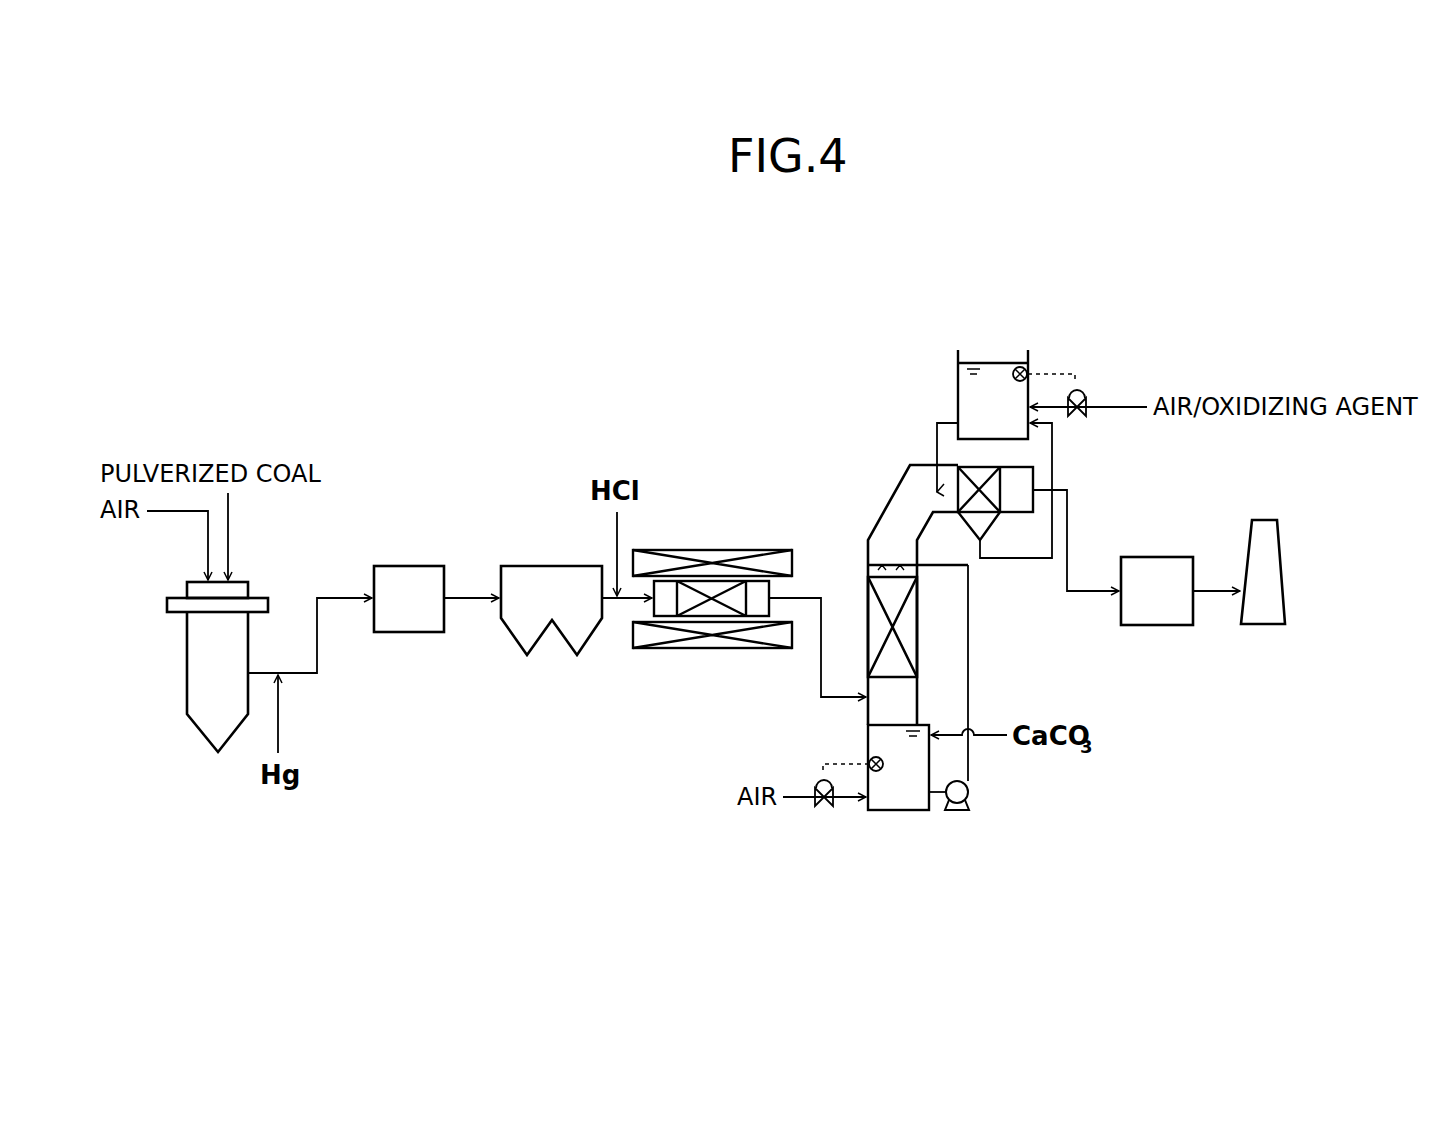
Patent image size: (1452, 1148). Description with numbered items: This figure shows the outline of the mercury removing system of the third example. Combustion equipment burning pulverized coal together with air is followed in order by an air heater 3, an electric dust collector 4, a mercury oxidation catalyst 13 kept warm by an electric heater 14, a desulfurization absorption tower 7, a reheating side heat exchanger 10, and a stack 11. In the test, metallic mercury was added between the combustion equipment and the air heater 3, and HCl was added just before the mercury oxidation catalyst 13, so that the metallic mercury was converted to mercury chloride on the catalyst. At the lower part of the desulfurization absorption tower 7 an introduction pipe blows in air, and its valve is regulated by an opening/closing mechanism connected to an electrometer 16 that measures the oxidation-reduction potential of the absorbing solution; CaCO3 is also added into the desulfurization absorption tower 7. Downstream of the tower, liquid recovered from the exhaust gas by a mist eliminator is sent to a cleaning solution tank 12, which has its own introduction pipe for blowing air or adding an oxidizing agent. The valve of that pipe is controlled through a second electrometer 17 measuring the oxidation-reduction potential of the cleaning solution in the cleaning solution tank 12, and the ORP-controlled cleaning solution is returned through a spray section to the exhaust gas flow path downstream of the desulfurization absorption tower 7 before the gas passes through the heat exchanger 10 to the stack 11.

The air heater 3 is at (399, 566).
The dust collector 4 is at (525, 566).
The desulfurization absorption tower 7 is at (906, 468).
The reheating side heat exchanger 10 is at (1148, 557).
The stack 11 is at (1283, 566).
The cleaning solution tank 12 is at (958, 386).
The mercury oxidation catalyst 13 is at (710, 618).
The electric heater 14 is at (710, 550).
The ORP meter 16 is at (880, 778).
The ORP meter 17 is at (1020, 367).